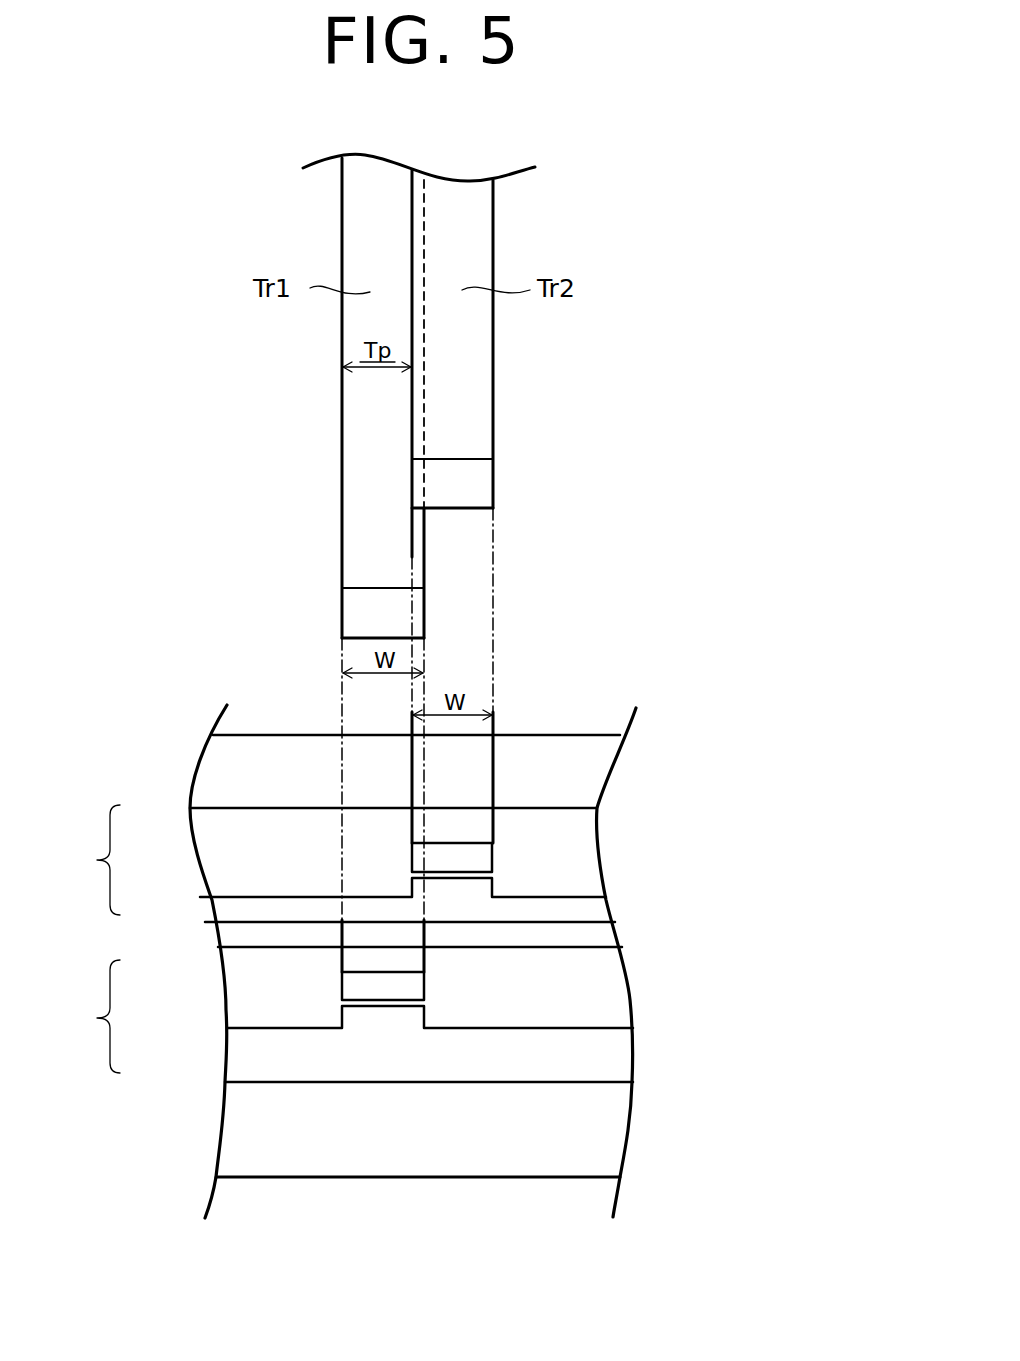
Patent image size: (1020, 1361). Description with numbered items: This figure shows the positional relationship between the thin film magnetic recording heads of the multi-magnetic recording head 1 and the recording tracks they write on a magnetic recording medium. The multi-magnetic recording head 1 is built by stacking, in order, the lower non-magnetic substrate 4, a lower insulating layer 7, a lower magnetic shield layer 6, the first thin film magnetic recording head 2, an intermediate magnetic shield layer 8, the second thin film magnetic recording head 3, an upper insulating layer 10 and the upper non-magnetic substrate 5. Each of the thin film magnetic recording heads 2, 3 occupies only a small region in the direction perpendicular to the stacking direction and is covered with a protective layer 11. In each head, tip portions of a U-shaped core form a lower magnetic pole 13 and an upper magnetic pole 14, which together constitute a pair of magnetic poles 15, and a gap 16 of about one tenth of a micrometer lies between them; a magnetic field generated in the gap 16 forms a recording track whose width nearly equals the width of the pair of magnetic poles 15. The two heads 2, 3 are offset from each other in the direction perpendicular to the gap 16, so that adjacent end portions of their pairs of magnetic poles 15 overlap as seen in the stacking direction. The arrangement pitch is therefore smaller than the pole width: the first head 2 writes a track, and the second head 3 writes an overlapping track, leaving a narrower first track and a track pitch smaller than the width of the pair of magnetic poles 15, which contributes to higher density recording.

The multi-magnetic recording head 1 is at (760, 756).
The first thin film magnetic recording head 2 is at (382, 1000).
The second thin film magnetic recording head 3 is at (467, 865).
The lower non-magnetic substrate 4 is at (548, 1195).
The upper non-magnetic substrate 5 is at (568, 720).
The lower magnetic shield layer 6 is at (600, 1053).
The lower insulating layer 7 is at (595, 1120).
The intermediate magnetic shield layer 8 is at (597, 935).
The upper insulating layer 10 is at (577, 768).
The protective layer 11 is at (568, 835).
The lower magnetic pole 13 is at (430, 885).
The upper magnetic pole 14 is at (432, 855).
The pair of magnetic poles 15 is at (90, 939).
The gap 16 is at (485, 876).